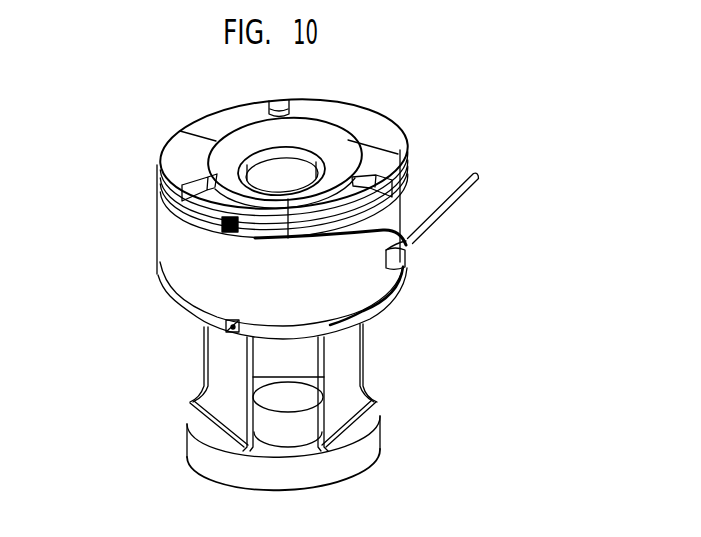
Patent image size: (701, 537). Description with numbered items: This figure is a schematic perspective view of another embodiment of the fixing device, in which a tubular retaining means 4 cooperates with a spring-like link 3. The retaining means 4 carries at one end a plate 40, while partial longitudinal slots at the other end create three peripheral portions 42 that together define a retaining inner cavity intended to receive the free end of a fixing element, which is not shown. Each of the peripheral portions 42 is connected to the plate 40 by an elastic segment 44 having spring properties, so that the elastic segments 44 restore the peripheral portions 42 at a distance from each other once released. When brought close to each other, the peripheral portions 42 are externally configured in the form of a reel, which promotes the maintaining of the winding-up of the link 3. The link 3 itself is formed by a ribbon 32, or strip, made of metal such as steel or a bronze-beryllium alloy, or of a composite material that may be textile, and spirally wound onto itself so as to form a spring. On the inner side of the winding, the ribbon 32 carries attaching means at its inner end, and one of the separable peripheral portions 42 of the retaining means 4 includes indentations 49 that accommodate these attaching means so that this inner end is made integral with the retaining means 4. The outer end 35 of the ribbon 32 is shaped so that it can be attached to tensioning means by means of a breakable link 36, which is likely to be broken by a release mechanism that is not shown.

The link 3 is at (126, 236).
The retaining means 4 is at (407, 358).
The ribbon 32 is at (176, 267).
The outer end 35 is at (371, 278).
The breakable link 36 is at (462, 188).
The plate 40 is at (343, 462).
The peripheral portions 42 is at (192, 155).
The elastic segment 44 is at (233, 402).
The indentations 49 is at (228, 223).